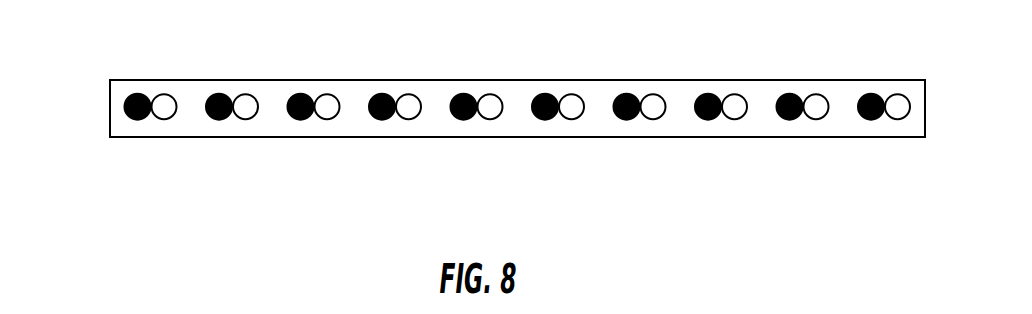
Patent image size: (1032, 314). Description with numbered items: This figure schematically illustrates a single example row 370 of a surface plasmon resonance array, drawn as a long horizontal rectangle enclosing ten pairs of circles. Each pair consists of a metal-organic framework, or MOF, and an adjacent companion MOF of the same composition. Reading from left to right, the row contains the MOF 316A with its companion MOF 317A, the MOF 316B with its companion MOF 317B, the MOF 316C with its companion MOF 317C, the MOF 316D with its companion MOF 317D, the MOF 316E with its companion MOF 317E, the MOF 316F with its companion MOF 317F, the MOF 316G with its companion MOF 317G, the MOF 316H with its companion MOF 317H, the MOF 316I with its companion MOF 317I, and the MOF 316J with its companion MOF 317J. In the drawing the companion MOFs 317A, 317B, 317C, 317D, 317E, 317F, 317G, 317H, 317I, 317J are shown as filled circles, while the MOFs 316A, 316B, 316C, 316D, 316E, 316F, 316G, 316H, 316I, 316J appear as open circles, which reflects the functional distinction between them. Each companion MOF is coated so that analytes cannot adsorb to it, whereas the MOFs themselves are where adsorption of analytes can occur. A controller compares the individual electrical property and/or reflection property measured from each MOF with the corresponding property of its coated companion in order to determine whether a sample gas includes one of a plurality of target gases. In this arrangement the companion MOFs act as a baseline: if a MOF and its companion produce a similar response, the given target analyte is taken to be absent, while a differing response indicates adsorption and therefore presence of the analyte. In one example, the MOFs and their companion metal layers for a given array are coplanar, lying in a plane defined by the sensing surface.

The row 370 is at (97, 52).
The companion MOF 317A is at (138, 93).
The MOF 316A is at (164, 108).
The companion MOF 317B is at (220, 93).
The MOF 316B is at (246, 108).
The companion MOF 317C is at (302, 93).
The MOF 316C is at (327, 108).
The companion MOF 317D is at (383, 93).
The MOF 316D is at (408, 108).
The companion MOF 317E is at (464, 93).
The MOF 316E is at (490, 108).
The companion MOF 317F is at (546, 93).
The MOF 316F is at (572, 108).
The companion MOF 317G is at (628, 93).
The MOF 316G is at (653, 108).
The companion MOF 317H is at (709, 93).
The MOF 316H is at (734, 108).
The companion MOF 317I is at (790, 93).
The MOF 316I is at (816, 108).
The companion MOF 317J is at (872, 93).
The MOF 316J is at (898, 108).